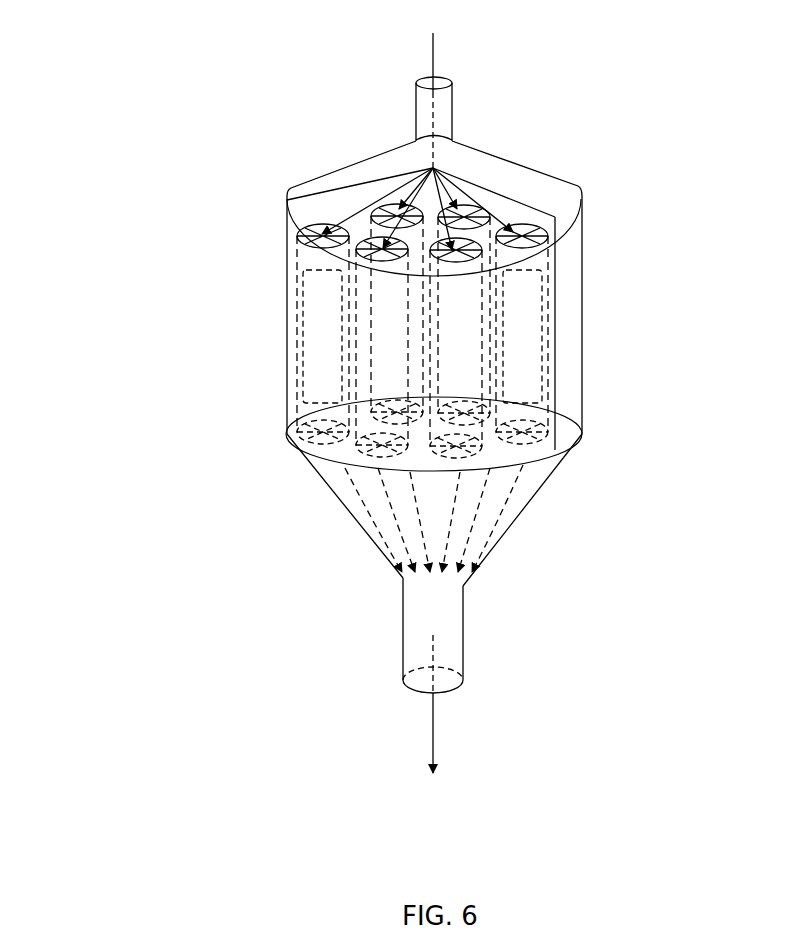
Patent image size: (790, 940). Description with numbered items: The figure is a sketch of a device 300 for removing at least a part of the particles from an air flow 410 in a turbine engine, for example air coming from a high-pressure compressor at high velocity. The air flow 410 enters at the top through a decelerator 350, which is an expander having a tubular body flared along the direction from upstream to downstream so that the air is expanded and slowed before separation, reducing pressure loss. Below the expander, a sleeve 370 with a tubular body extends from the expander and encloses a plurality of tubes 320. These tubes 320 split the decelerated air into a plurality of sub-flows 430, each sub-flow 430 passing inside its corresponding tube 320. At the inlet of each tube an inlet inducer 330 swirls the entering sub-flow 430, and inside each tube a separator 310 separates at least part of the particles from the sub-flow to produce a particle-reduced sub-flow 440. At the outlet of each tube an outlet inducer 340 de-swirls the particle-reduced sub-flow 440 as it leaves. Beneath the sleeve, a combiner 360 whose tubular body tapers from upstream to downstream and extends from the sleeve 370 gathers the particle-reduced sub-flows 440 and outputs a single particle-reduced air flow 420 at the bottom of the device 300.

The device 300 is at (173, 58).
The separator 310 is at (315, 363).
The tube 320 is at (298, 305).
The inlet inducer 330 is at (305, 230).
The outlet inducer 340 is at (308, 435).
The decelerator 350 is at (547, 180).
The combiner 360 is at (530, 503).
The sleeve 370 is at (585, 240).
The air flow 410 is at (433, 53).
The particle-reduced air flow 420 is at (435, 730).
The sub-flow 430 is at (398, 187).
The particle-reduced sub-flow 440 is at (487, 527).